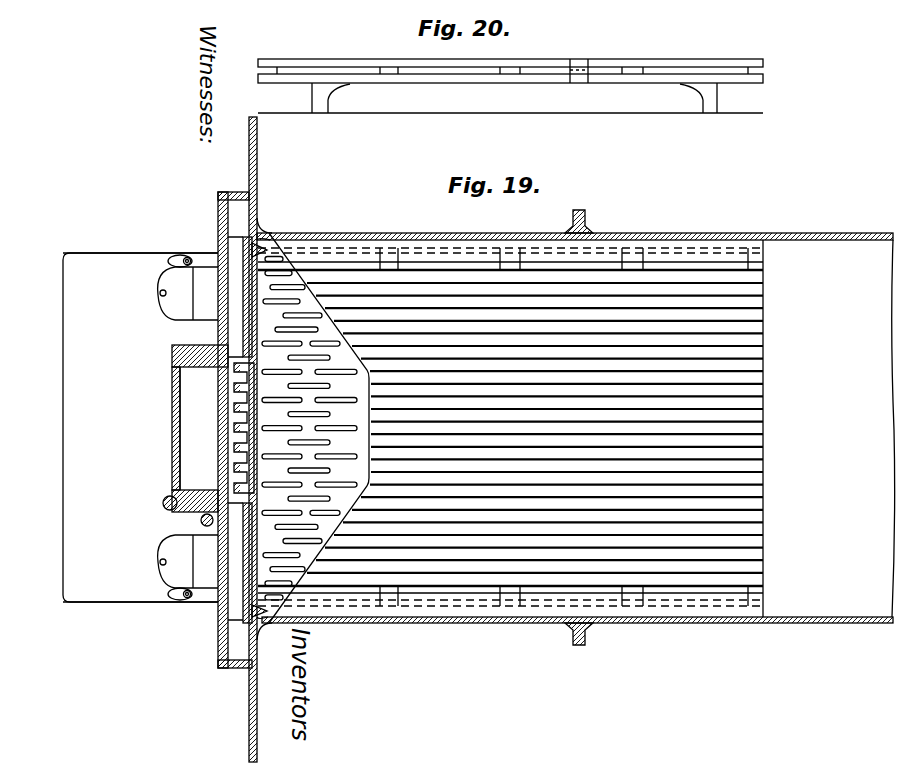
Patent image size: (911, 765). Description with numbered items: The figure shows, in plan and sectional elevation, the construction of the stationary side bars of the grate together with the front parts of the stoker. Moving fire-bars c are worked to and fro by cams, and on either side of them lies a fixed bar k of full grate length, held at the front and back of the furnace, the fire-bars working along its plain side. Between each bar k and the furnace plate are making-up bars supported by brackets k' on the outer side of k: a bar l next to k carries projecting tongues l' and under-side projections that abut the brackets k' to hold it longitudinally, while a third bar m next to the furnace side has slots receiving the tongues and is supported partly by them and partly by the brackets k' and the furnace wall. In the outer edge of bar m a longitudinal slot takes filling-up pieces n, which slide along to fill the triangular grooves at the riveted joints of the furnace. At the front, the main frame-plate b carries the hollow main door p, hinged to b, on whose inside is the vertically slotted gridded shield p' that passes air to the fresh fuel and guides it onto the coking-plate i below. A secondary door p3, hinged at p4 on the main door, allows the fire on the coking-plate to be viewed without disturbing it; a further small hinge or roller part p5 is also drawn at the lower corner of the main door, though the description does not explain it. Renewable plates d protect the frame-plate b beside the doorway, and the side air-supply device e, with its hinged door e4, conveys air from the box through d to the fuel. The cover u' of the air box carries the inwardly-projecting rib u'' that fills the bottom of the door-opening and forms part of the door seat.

In FIG. 20, the third bar m is at (338, 62).
In FIG. 19, the third bar m is at (360, 245).
In FIG. 19, the making-up bar l is at (516, 425).
In FIG. 19, the fixed bar k is at (522, 428).
In FIG. 20, the bracket k' is at (512, 98).
In FIG. 20, the projecting tongue l' is at (512, 86).
In FIG. 19, the projecting tongue l' is at (526, 430).
In FIG. 20, the filling-up piece n is at (579, 60).
In FIG. 19, the filling-up piece n is at (586, 228).
In FIG. 19, the coking-plate i is at (315, 428).
In FIG. 19, the fire-bar c is at (535, 428).
In FIG. 19, the main frame-plate b is at (218, 219).
In FIG. 19, the protecting plate d is at (247, 430).
In FIG. 19, the side air-supply device e is at (188, 427).
In FIG. 19, the hinged door e4 is at (177, 262).
In FIG. 19, the main door p is at (193, 426).
In FIG. 19, the gridded shield p' is at (255, 428).
In FIG. 19, the secondary door p3 is at (172, 430).
In FIG. 19, the hinge of secondary door p4 is at (165, 500).
In FIG. 19, the roller p5 is at (197, 521).
In FIG. 19, the lid or cover u' is at (140, 427).
In FIG. 19, the inwardly-projecting rib u'' is at (204, 428).